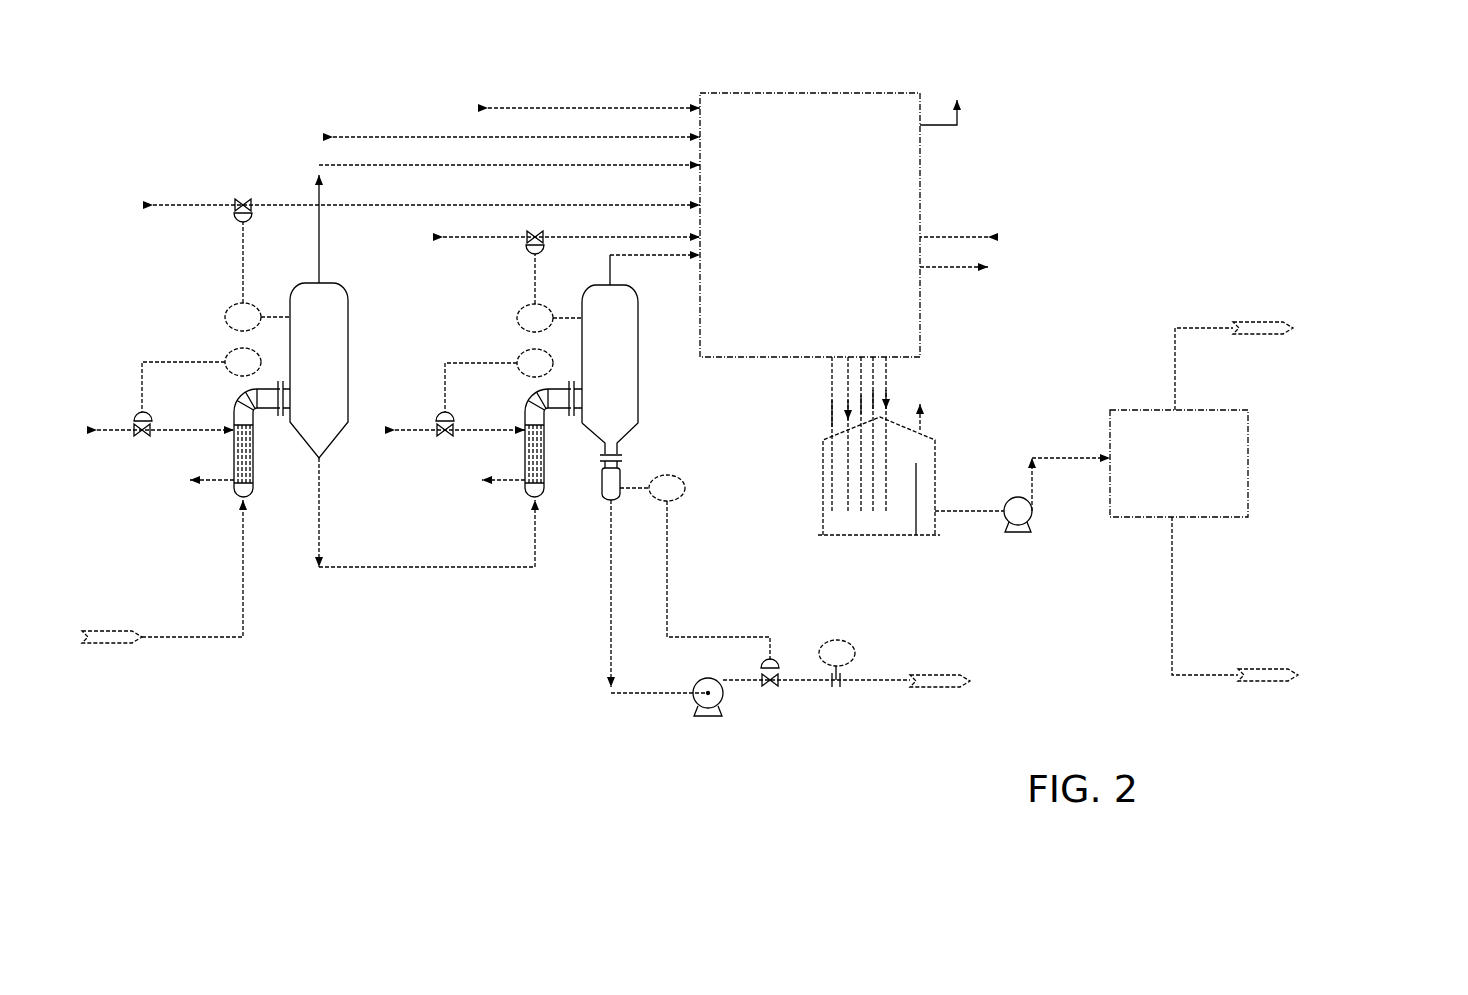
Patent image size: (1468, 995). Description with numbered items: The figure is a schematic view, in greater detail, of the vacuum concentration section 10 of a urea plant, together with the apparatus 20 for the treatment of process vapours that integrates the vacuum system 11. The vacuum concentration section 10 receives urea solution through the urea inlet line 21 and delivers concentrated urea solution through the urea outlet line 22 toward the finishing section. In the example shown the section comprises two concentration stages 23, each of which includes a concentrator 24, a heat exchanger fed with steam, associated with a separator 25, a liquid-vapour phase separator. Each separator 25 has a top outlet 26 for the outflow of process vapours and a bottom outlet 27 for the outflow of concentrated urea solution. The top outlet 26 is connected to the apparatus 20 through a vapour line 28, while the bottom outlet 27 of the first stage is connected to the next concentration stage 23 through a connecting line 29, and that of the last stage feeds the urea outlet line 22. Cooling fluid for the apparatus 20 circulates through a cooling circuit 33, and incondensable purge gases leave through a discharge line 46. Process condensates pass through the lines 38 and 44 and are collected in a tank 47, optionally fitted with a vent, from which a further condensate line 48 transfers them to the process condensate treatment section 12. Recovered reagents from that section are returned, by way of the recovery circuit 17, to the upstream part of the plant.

The vacuum concentration section 10 is at (566, 431).
The vacuum system 11 is at (897, 163).
The process condensate treatment section 12 is at (1230, 497).
The recovery circuit 17 is at (186, 297).
The apparatus 20 is at (658, 189).
The urea inlet line 21 is at (203, 640).
The urea outlet line 22 is at (878, 685).
The concentration stage 23 is at (702, 452).
The concentrator 24 is at (246, 458).
The separator 25 is at (345, 353).
The top outlet 26 is at (320, 283).
The bottom outlet 27 is at (322, 462).
The vapour line 28 is at (318, 188).
The connecting line 29 is at (487, 570).
The cooling circuit 33 is at (974, 287).
The line 38 is at (848, 383).
The condensate line 44 is at (886, 383).
The discharge line 46 is at (957, 115).
The tank 47 is at (935, 457).
The further condensate line 48 is at (1075, 457).